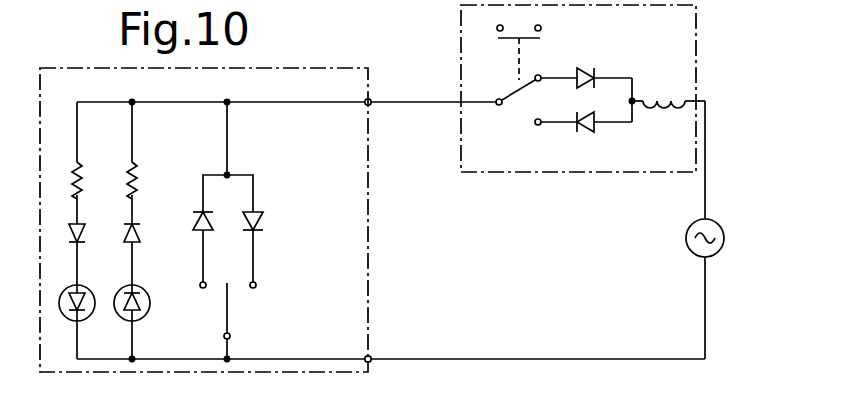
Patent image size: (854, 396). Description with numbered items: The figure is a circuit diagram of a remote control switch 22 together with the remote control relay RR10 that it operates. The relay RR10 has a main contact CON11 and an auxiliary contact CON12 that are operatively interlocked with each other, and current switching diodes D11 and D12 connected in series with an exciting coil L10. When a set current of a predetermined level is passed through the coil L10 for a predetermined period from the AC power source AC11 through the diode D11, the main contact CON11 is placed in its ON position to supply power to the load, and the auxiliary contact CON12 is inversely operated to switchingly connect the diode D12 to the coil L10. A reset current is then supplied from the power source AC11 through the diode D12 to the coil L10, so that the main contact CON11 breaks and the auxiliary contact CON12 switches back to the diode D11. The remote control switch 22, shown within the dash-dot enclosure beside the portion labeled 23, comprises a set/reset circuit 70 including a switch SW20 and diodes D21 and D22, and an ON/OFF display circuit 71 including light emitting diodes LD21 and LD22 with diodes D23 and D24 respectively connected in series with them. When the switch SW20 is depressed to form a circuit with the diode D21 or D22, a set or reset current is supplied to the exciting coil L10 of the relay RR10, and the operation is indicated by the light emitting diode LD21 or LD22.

The remote control switch 22 is at (354, 345).
The control unit 23 is at (538, 183).
The set/reset circuit 70 is at (258, 260).
The ON/OFF display circuit 71 is at (99, 282).
The diode D24 is at (93, 222).
The diode D23 is at (154, 238).
The diode D22 is at (219, 236).
The diode D21 is at (272, 216).
The light emitting diode LD22 is at (93, 316).
The light emitting diode LD21 is at (152, 315).
The switch SW20 is at (259, 321).
The remote control relay RR10 is at (568, 173).
The main contact CON11 is at (522, 27).
The auxiliary contact CON12 is at (512, 106).
The current switching diode D11 is at (586, 68).
The current switching diode D12 is at (587, 134).
The exciting coil L10 is at (658, 87).
The AC power source AC11 is at (678, 245).